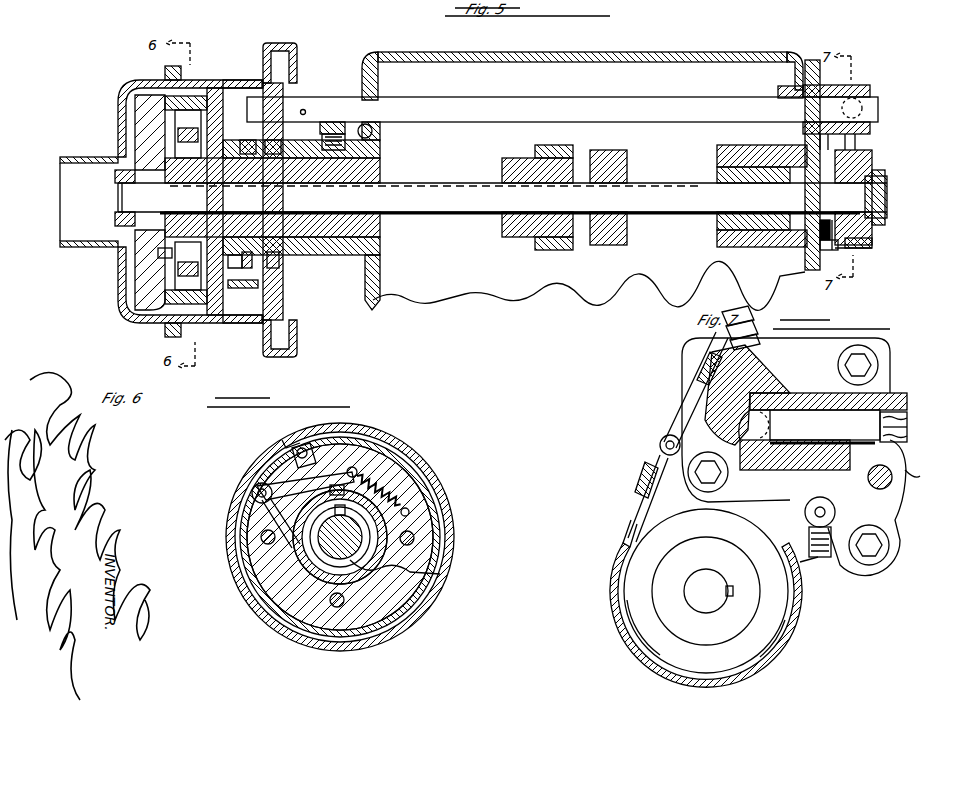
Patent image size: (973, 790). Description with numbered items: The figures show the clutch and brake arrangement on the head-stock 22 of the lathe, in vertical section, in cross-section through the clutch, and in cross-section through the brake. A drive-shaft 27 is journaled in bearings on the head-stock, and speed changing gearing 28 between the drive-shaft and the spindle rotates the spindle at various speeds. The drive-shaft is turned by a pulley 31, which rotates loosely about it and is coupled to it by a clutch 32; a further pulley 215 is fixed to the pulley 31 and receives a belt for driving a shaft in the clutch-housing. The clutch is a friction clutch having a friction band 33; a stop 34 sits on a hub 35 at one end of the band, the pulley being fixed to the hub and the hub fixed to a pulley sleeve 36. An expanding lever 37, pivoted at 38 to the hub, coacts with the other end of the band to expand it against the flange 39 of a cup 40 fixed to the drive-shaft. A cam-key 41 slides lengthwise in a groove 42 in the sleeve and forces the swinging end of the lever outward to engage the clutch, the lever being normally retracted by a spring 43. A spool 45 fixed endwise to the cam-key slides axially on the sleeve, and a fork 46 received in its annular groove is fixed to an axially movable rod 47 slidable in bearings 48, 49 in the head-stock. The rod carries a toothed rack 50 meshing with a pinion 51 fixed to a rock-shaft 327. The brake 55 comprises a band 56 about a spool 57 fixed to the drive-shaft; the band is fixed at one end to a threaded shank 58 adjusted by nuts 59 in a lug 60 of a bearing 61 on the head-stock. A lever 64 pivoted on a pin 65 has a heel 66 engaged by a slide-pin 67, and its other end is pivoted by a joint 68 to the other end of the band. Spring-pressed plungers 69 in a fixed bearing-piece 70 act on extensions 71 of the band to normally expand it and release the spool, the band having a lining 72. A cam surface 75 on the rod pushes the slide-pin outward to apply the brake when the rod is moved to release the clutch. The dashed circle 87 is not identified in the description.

In FIG. 5, the pulley 215 is at (96, 157).
In FIG. 5, the head-stock 22 is at (702, 54).
In FIG. 5, the drive-shaft 27 is at (468, 215).
In FIG. 6, the drive-shaft 27 is at (395, 585).
In FIG. 7, the drive-shaft 27 is at (708, 605).
In FIG. 5, the speed changing gearing 28 is at (608, 240).
In FIG. 5, the pulley 31 is at (234, 85).
In FIG. 5, the clutch 32 is at (212, 100).
In FIG. 6, the clutch 32 is at (416, 455).
In FIG. 5, the friction band 33 is at (160, 88).
In FIG. 6, the friction band 33 is at (440, 526).
In FIG. 6, the stop 34 is at (314, 458).
In FIG. 5, the hub 35 is at (150, 298).
In FIG. 6, the hub 35 is at (290, 445).
In FIG. 5, the pulley sleeve 36 is at (238, 262).
In FIG. 6, the pulley sleeve 36 is at (383, 537).
In FIG. 5, the expanding lever 37 is at (182, 200).
In FIG. 6, the expanding lever 37 is at (290, 485).
In FIG. 6, the pivot 38 is at (305, 510).
In FIG. 5, the flange 39 is at (200, 320).
In FIG. 6, the flange 39 is at (252, 490).
In FIG. 5, the cup 40 is at (162, 320).
In FIG. 6, the cup 40 is at (232, 572).
In FIG. 5, the cam-key 41 is at (248, 145).
In FIG. 6, the cam-key 41 is at (330, 490).
In FIG. 5, the groove 42 is at (190, 180).
In FIG. 6, the spring 43 is at (412, 482).
In FIG. 5, the spool 45 is at (270, 268).
In FIG. 5, the fork 46 is at (240, 140).
In FIG. 5, the axially movable rod 47 is at (505, 108).
In FIG. 7, the axially movable rod 47 is at (740, 433).
In FIG. 5, the bearing 48 is at (382, 95).
In FIG. 5, the bearing 49 is at (788, 86).
In FIG. 5, the toothed rack 50 is at (366, 124).
In FIG. 5, the pinion 51 is at (322, 140).
In FIG. 5, the brake 55 is at (872, 242).
In FIG. 7, the brake 55 is at (612, 628).
In FIG. 5, the brake-band 56 is at (860, 250).
In FIG. 7, the brake-band 56 is at (632, 525).
In FIG. 5, the spool 57 is at (872, 160).
In FIG. 7, the spool 57 is at (770, 658).
In FIG. 7, the threaded shank 58 is at (680, 410).
In FIG. 7, the nuts 59 is at (722, 318).
In FIG. 7, the lug 60 is at (752, 362).
In FIG. 5, the bearing 61 is at (860, 90).
In FIG. 7, the bearing 61 is at (800, 397).
In FIG. 7, the lever 64 is at (895, 505).
In FIG. 7, the pin 65 is at (893, 480).
In FIG. 7, the heel 66 is at (908, 430).
In FIG. 7, the slide-pin 67 is at (908, 416).
In FIG. 7, the joint 68 is at (806, 511).
In FIG. 5, the spring-pressed plungers 69 is at (828, 250).
In FIG. 7, the spring-pressed plungers 69 is at (790, 632).
In FIG. 5, the bearing-piece 70 is at (800, 250).
In FIG. 5, the extensions 71 is at (834, 246).
In FIG. 5, the lining 72 is at (872, 226).
In FIG. 7, the lining 72 is at (628, 652).
In FIG. 7, the cam surface 75 is at (780, 392).
In FIG. 5, the opening 87 is at (872, 108).
In FIG. 5, the rock-shaft 327 is at (338, 120).